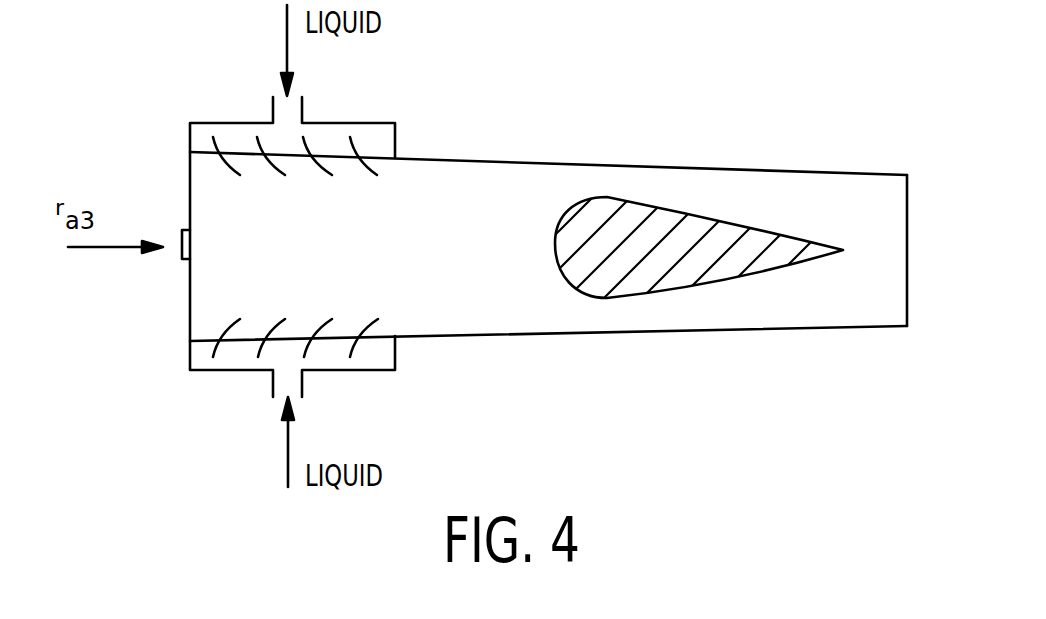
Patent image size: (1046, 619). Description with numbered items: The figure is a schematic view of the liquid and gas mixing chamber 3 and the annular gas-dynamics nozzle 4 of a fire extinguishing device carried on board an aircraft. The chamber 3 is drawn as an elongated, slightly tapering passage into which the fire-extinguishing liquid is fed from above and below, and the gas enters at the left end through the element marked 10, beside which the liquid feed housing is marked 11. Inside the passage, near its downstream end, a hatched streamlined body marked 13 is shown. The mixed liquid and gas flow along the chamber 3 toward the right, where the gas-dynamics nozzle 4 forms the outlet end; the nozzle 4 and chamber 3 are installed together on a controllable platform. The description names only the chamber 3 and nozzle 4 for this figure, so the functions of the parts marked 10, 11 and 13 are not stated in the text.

The liquid and gas mixing chamber 3 is at (477, 178).
The gas-dynamics nozzle 4 is at (762, 195).
The gas inlet 10 is at (185, 267).
The liquid inlet housing 11 is at (203, 377).
The hydrofoil obstacle 13 is at (648, 268).